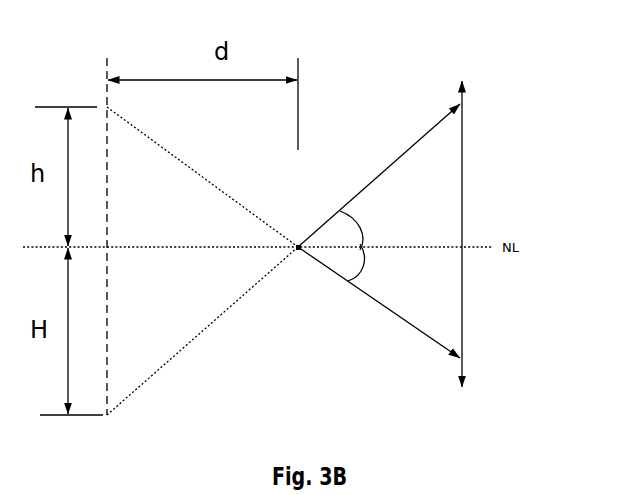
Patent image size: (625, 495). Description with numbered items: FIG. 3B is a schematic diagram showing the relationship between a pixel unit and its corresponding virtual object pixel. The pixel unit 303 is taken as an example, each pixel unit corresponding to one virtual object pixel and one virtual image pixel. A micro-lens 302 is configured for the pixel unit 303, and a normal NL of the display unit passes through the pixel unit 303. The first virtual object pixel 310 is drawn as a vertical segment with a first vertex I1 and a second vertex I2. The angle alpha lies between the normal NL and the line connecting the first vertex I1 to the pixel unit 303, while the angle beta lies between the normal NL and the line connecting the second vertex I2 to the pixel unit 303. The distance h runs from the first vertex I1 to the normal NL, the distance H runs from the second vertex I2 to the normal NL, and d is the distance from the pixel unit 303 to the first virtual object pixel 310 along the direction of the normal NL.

The micro-lens 302 is at (462, 333).
The pixel unit 303 is at (300, 251).
The first virtual object pixel 310 is at (107, 368).